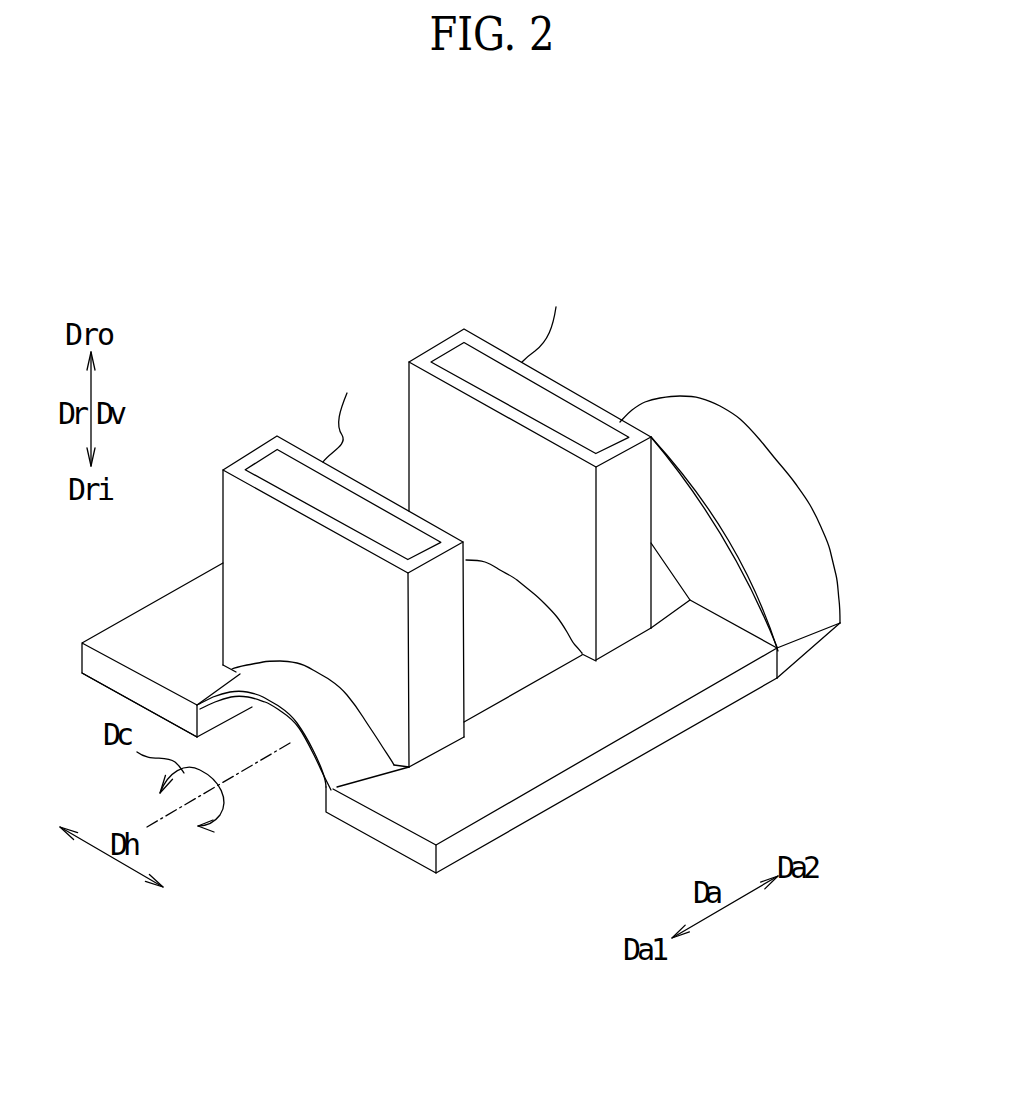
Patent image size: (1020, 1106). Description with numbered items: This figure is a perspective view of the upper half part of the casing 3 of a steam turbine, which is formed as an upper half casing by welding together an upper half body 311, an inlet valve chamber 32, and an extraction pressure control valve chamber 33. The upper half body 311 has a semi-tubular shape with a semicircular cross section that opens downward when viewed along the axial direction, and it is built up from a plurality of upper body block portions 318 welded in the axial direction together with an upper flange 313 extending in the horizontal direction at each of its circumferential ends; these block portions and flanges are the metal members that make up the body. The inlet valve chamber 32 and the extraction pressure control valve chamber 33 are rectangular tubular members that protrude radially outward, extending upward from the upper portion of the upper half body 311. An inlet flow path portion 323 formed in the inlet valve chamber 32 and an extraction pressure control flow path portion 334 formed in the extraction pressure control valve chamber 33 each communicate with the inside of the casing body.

The casing 3 is at (675, 285).
The inlet valve chamber 32 is at (303, 448).
The extraction pressure control valve chamber 33 is at (522, 362).
The upper half body 311 is at (260, 646).
The upper flange 313 is at (138, 648).
The upper body block portion 318 is at (678, 470).
The inlet flow path portion 323 is at (282, 449).
The extraction pressure control flow path portion 334 is at (484, 366).